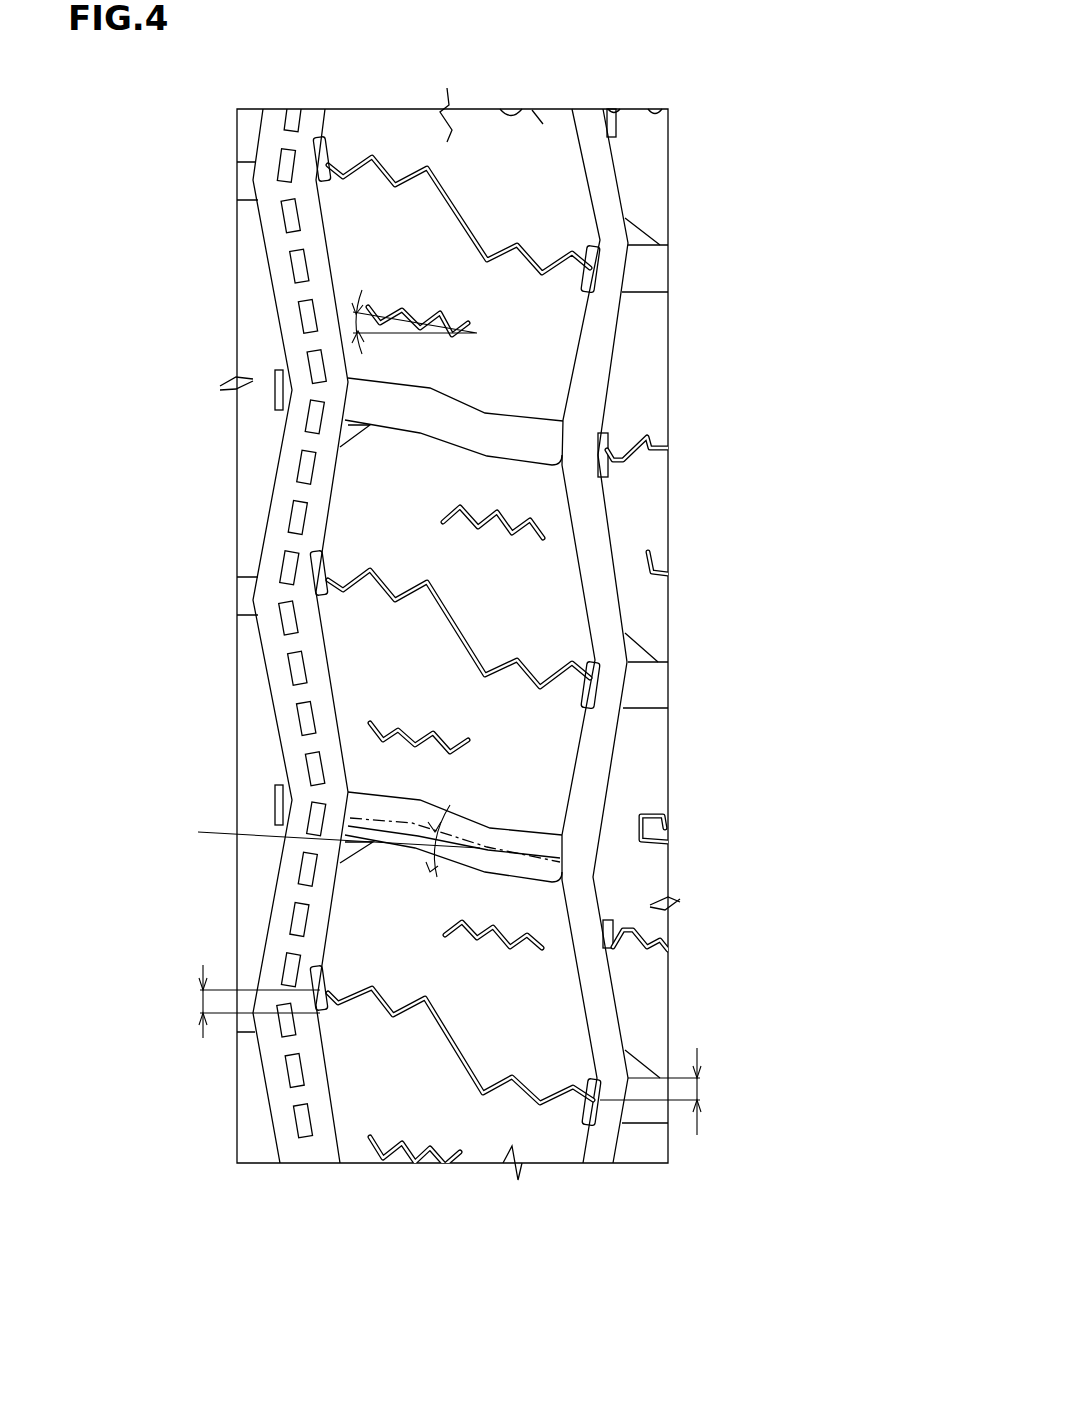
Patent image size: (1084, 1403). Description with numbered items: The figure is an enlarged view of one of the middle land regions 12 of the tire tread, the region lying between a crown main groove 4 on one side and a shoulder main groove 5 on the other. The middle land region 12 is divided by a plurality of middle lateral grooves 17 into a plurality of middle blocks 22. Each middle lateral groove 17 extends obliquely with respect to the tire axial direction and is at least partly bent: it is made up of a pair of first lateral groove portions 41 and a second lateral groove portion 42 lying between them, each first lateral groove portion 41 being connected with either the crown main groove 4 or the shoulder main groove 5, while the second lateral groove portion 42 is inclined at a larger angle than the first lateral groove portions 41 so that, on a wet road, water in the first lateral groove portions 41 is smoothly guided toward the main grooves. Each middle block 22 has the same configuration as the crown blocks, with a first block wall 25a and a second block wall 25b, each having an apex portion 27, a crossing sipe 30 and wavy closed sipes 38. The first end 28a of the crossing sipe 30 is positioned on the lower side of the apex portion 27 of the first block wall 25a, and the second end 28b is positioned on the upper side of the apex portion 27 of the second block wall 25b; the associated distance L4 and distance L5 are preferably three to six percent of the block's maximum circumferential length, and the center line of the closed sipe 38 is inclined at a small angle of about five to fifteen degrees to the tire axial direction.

The crown main groove 4 is at (596, 155).
The shoulder main groove 5 is at (305, 160).
The middle land region 12 is at (473, 160).
The middle lateral groove 17 is at (452, 416).
The middle block 22 is at (512, 205).
The first block wall 25a is at (570, 540).
The second block wall 25b is at (330, 496).
The apex portion 27 is at (312, 572).
The first end 28a is at (598, 688).
The second end 28b is at (330, 580).
The crossing sipe 30 is at (468, 640).
The closed sipe 38 is at (432, 318).
The first lateral groove portion 41 is at (388, 807).
The second lateral groove portion 42 is at (462, 830).
The distance L4 is at (668, 1091).
The distance L5 is at (238, 1001).